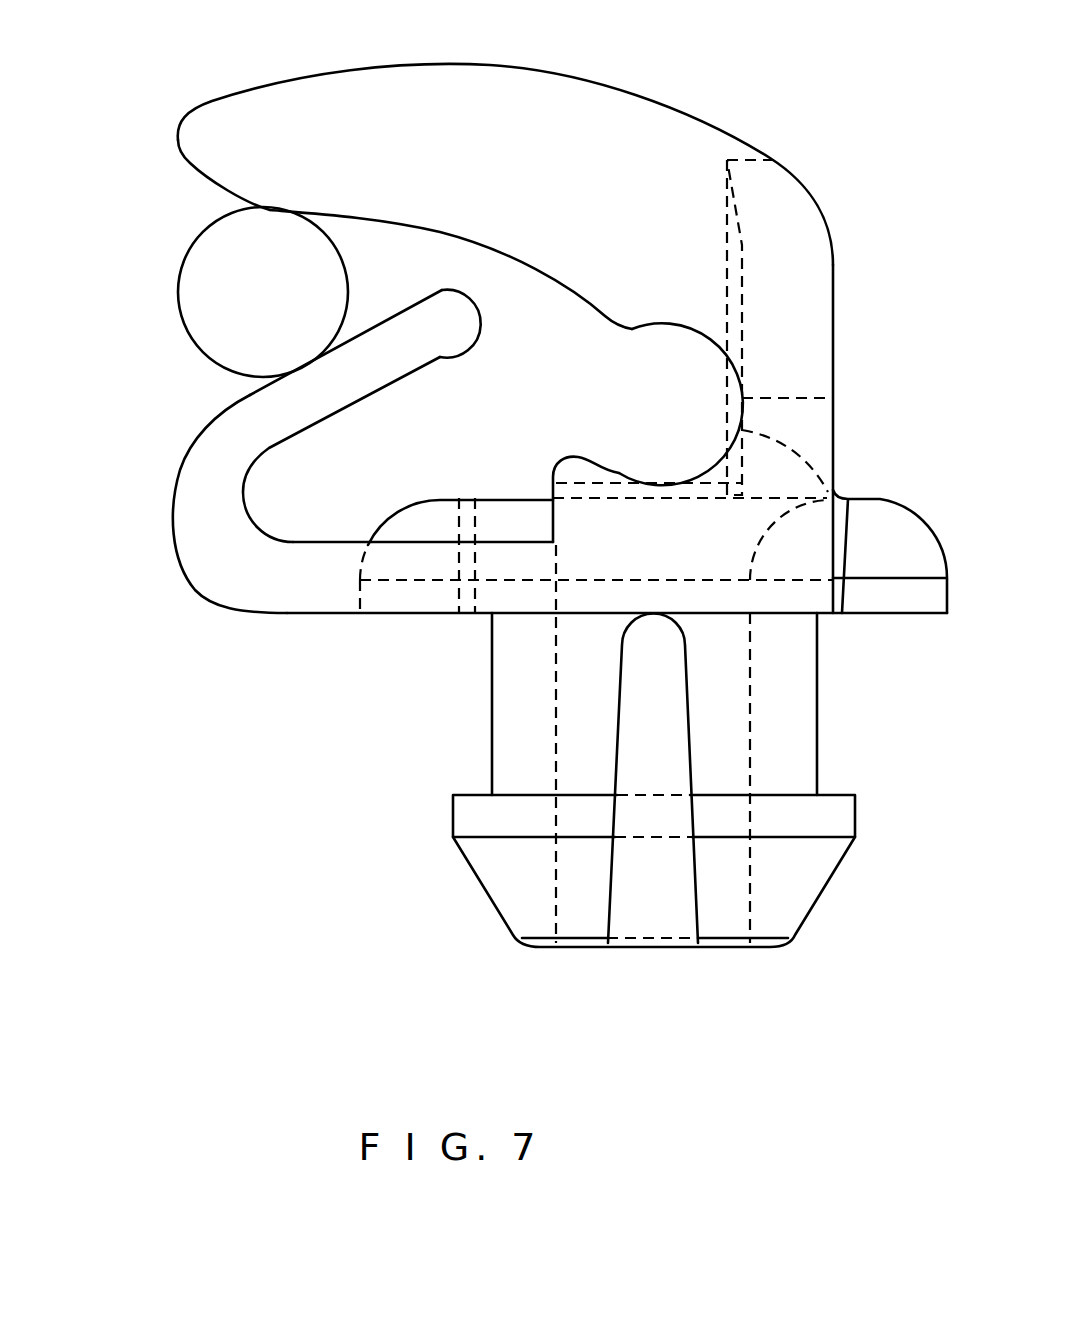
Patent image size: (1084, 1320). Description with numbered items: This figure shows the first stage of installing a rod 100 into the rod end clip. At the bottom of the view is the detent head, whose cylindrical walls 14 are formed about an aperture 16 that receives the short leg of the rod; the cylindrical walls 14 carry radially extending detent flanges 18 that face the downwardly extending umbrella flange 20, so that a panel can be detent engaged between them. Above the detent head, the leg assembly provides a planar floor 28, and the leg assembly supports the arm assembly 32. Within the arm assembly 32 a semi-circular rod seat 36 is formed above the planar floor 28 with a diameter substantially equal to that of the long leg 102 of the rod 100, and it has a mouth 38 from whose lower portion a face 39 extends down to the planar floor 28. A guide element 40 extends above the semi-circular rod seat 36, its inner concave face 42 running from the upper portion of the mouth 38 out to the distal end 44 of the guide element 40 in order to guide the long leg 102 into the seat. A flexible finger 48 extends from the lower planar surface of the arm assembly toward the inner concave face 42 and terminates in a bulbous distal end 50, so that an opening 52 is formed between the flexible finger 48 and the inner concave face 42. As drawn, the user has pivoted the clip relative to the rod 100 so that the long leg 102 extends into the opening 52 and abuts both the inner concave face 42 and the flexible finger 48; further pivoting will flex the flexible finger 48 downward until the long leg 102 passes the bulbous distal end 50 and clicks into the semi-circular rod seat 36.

The cylindrical walls 14 is at (818, 697).
The aperture 16 is at (750, 902).
The radially extending detent flanges 18 is at (855, 815).
The umbrella flange 20 is at (393, 618).
The planar floor 28 is at (590, 602).
The arm assembly 32 is at (757, 107).
The semi-circular rod seat 36 is at (648, 487).
The mouth 38 is at (583, 396).
The face 39 is at (545, 533).
The guide element 40 is at (485, 93).
The inner concave face 42 is at (457, 238).
The distal end 44 is at (202, 122).
The flexible finger 48 is at (336, 389).
The bulbous distal end 50 is at (438, 339).
The opening 52 is at (197, 397).
The rod 100 is at (208, 290).
The long leg 102 is at (207, 317).